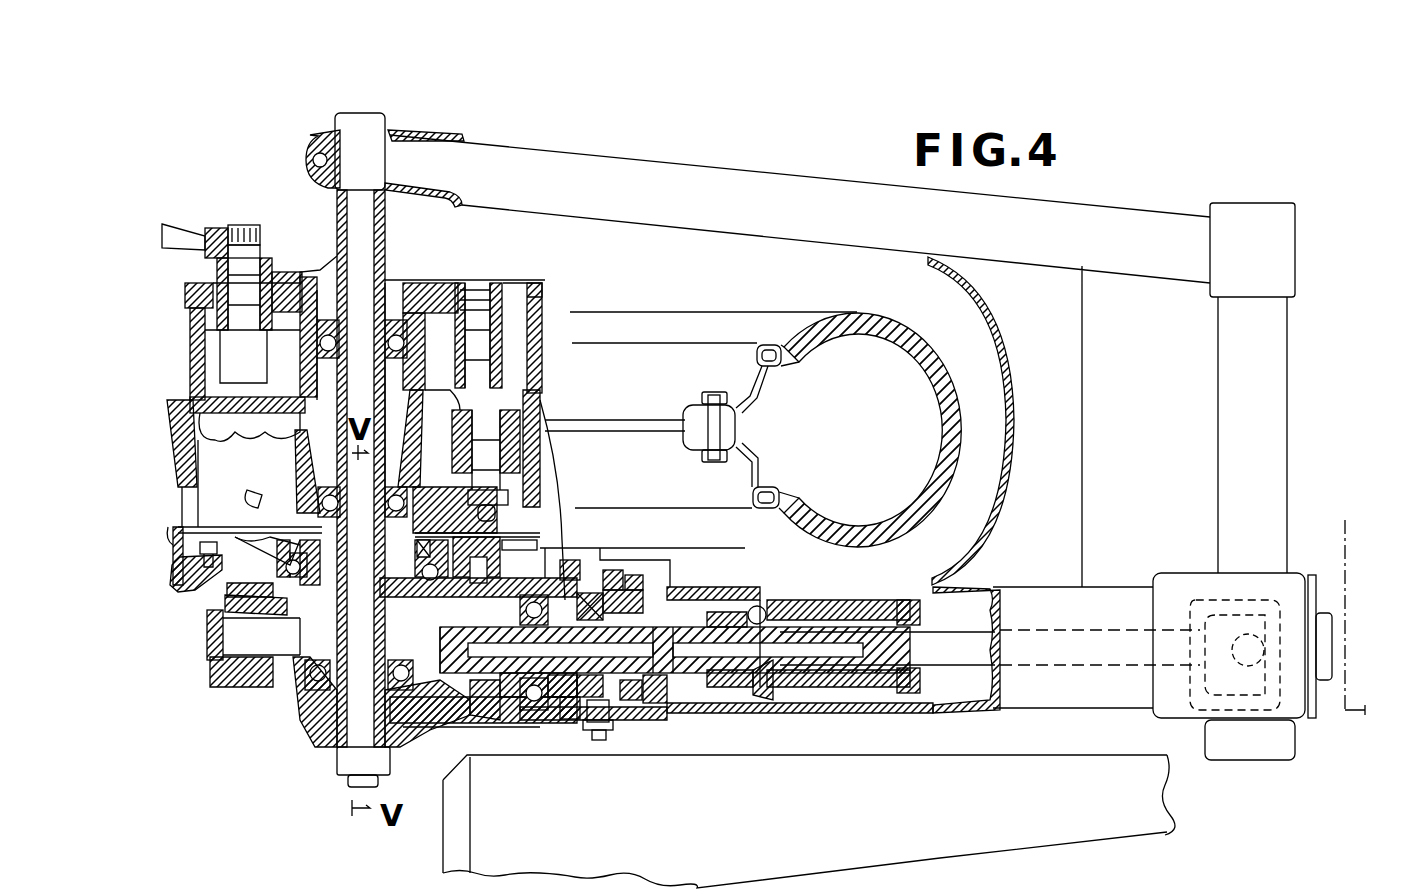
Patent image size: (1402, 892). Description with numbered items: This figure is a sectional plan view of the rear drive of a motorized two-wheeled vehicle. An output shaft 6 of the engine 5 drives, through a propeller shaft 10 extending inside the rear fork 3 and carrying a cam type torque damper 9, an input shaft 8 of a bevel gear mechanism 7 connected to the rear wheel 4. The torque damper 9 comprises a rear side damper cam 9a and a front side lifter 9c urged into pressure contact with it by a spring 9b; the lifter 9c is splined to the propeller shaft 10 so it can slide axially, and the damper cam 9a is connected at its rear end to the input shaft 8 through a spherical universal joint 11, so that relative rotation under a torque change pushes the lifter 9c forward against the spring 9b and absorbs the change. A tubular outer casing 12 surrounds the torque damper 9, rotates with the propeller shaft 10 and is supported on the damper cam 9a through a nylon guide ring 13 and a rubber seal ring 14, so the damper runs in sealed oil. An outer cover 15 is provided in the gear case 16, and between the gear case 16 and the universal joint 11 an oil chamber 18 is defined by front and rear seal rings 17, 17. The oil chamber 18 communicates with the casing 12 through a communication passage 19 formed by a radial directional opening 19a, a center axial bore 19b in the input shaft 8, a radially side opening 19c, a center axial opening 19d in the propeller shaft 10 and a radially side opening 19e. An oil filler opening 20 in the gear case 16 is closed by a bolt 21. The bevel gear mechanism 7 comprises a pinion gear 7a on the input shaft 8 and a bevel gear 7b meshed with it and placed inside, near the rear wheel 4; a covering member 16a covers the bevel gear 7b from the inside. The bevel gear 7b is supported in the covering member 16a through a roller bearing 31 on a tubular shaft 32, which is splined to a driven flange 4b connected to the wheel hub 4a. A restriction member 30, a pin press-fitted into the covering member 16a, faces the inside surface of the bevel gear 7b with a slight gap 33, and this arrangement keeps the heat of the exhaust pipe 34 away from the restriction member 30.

The rear fork 3 is at (1065, 695).
The rear wheel 4 is at (833, 322).
The wheel hub 4a is at (520, 388).
The driven flange 4b is at (255, 505).
The internal combustion engine 5 is at (1362, 722).
The output shaft 6 is at (1337, 680).
The bevel gear mechanism 7 is at (540, 560).
The pinion gear 7a is at (470, 705).
The bevel gear 7b is at (245, 625).
The input shaft 8 is at (552, 700).
The torque damper 9 is at (725, 702).
The damper cam 9a is at (705, 612).
The spring 9b is at (842, 605).
The lifter 9c is at (757, 606).
The propeller shaft 10 is at (970, 660).
The universal joint 11 is at (585, 600).
The outer casing 12 is at (825, 692).
The guide ring 13 is at (655, 703).
The seal ring 14 is at (632, 700).
The outer cover 15 is at (572, 710).
The gear case 16 is at (490, 720).
The covering member 16a is at (272, 548).
The seal rings 17 is at (590, 595).
The oil chamber 18 is at (590, 735).
The communication passage 19 is at (640, 640).
The radial directional opening 19a is at (615, 590).
The center axial bore 19b is at (625, 600).
The radially side opening 19c is at (660, 600).
The center axial opening 19d is at (735, 690).
The radially side opening 19e is at (768, 695).
The oil filler opening 20 is at (600, 725).
The bolt 21 is at (612, 740).
The restriction member 30 is at (535, 595).
The roller bearing 31 is at (262, 565).
The tubular shaft 32 is at (362, 245).
The gap 33 is at (475, 562).
The exhaust pipe 34 is at (487, 842).